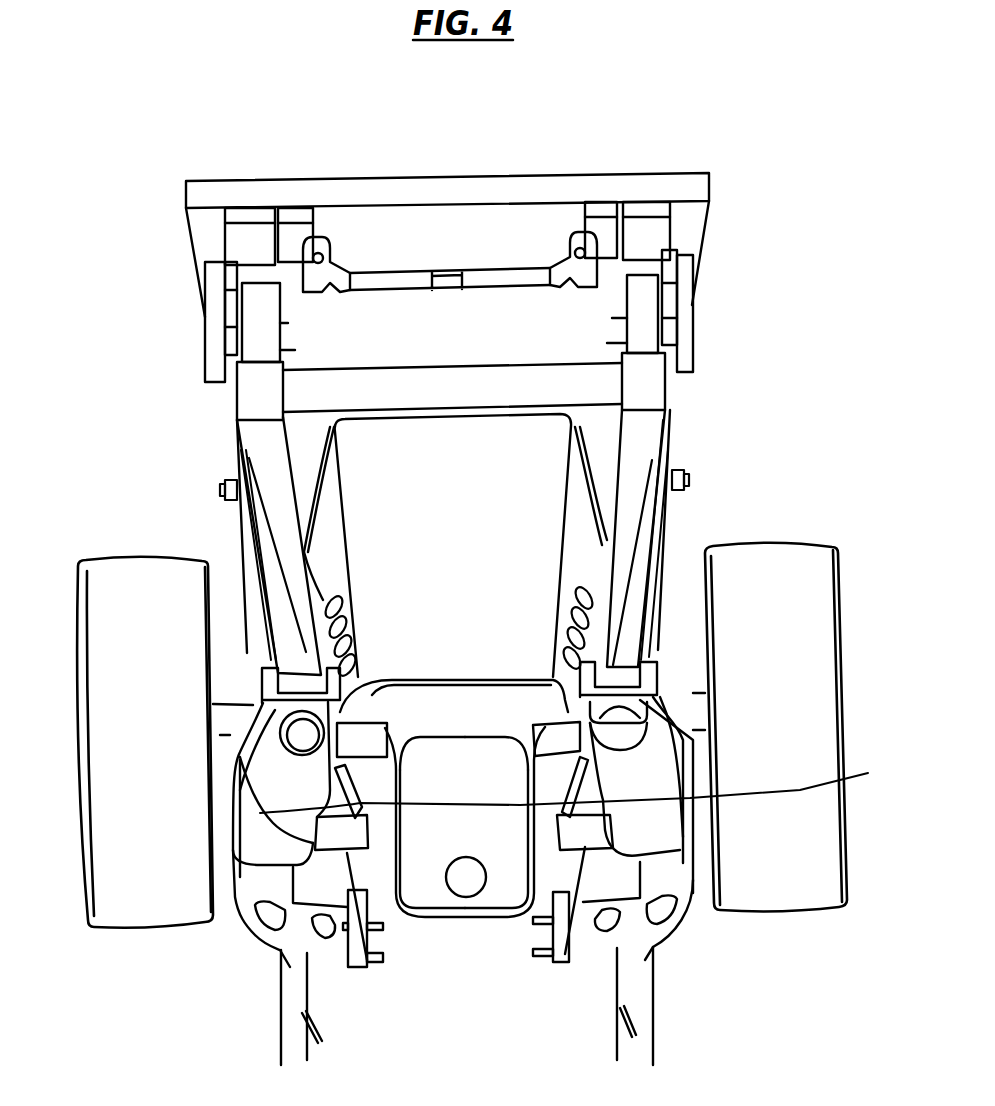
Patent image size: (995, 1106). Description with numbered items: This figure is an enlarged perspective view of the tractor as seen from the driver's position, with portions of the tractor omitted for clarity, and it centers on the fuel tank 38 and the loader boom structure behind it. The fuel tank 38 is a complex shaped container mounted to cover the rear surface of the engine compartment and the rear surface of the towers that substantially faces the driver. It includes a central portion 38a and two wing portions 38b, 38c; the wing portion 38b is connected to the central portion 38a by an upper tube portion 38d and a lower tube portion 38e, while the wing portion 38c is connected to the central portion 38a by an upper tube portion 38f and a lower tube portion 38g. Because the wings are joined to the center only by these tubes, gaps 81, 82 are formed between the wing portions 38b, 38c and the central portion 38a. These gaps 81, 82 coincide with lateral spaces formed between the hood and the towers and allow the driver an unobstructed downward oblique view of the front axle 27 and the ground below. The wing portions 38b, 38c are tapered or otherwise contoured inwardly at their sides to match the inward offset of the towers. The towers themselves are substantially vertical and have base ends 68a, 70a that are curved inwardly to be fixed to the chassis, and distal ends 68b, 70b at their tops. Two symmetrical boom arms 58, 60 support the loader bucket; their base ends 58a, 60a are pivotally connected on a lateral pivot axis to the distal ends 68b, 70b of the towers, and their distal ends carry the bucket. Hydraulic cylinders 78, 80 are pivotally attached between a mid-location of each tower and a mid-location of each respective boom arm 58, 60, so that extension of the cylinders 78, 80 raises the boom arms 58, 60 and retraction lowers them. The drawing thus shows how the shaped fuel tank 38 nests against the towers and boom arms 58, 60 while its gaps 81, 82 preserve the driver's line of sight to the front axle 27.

The fuel tank 38 is at (503, 950).
The central portion 38a is at (437, 900).
The wing portion 38b is at (650, 840).
The wing portion 38c is at (290, 850).
The upper tube portion 38d is at (515, 733).
The lower tube portion 38e is at (542, 880).
The upper tube portion 38f is at (402, 737).
The lower tube portion 38g is at (393, 878).
The boom arm 58 is at (653, 400).
The base end 58a is at (663, 452).
The boom arm 60 is at (257, 413).
The base end 60a is at (235, 438).
The base end 68a is at (653, 930).
The distal end 68b is at (665, 640).
The base end 70a is at (283, 953).
The distal end 70b is at (245, 650).
The hydraulic cylinder 78 is at (690, 650).
The hydraulic cylinder 80 is at (253, 647).
The gap 81 is at (800, 790).
The gap 82 is at (260, 813).
The front axle 27 is at (232, 722).